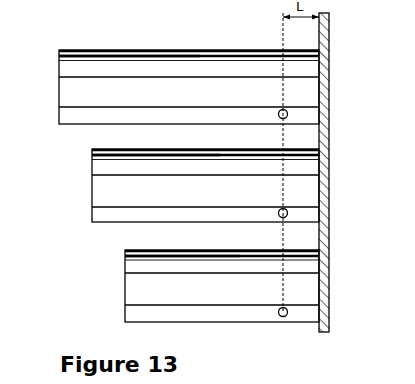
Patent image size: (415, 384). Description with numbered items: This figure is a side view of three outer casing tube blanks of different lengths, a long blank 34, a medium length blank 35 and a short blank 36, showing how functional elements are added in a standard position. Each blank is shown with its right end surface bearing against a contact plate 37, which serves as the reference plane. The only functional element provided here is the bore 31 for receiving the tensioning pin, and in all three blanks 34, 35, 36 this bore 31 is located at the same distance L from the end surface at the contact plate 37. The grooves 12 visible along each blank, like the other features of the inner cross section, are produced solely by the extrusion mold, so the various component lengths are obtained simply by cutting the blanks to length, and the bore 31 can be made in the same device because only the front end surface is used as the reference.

The grooves 12 is at (68, 60).
The bore 31 is at (288, 114).
The long blank 34 is at (310, 87).
The medium length blank 35 is at (310, 187).
The short blank 36 is at (308, 287).
The contact plate 37 is at (329, 330).